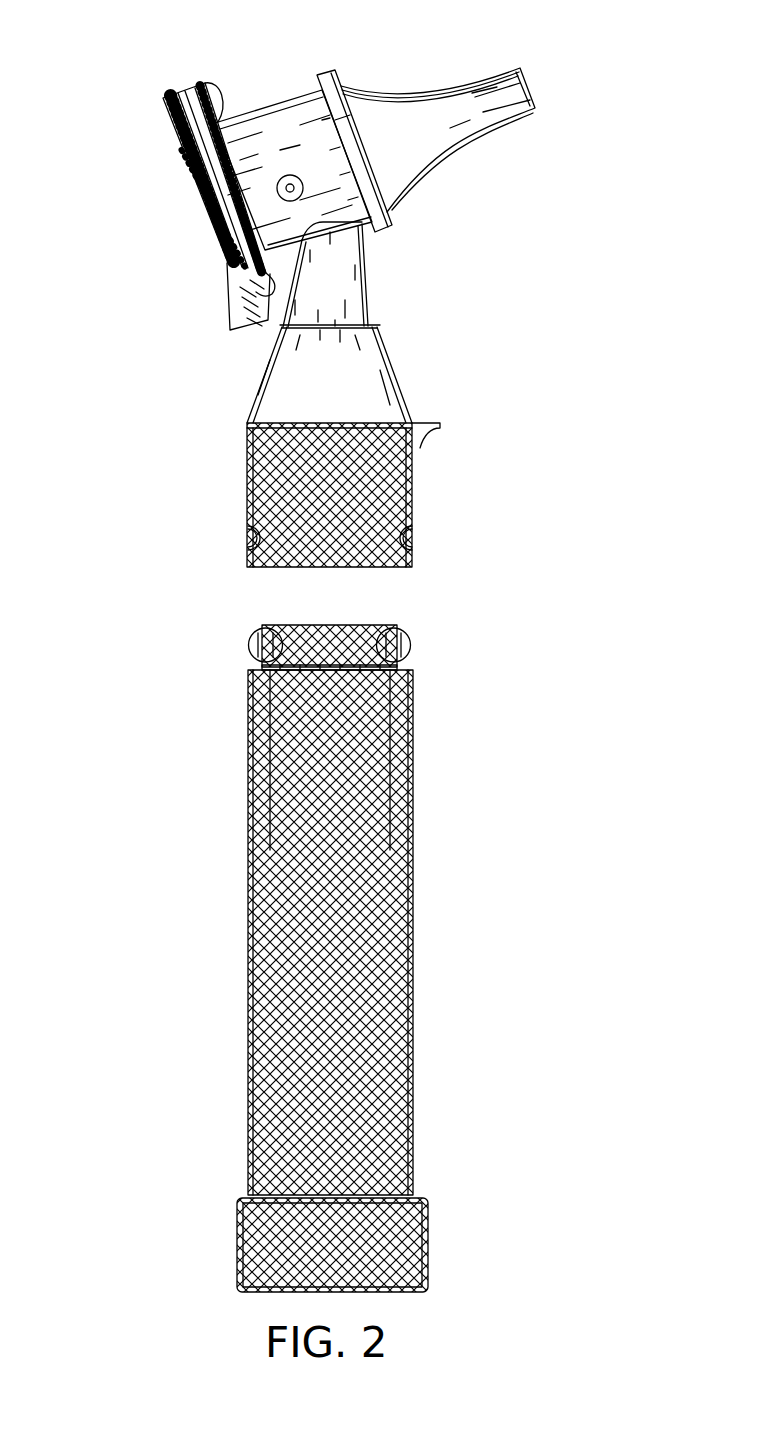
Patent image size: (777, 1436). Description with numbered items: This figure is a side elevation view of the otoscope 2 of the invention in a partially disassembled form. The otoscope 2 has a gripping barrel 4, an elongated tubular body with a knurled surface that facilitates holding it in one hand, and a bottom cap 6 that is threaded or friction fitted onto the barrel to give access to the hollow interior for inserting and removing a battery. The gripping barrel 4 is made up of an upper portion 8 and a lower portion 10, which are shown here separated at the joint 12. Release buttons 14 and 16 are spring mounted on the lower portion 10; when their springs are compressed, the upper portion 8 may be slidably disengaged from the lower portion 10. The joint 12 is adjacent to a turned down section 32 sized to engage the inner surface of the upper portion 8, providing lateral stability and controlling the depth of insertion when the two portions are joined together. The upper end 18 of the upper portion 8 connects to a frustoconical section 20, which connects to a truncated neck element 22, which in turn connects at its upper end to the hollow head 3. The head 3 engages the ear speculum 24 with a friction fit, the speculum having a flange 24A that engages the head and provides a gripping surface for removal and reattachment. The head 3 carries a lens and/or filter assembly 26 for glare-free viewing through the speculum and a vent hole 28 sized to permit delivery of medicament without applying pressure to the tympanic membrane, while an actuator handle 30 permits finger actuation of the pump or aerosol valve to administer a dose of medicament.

The otoscope 2 is at (315, 862).
The hollow head 3 is at (265, 103).
The gripping barrel 4 is at (247, 800).
The bottom cap 6 is at (430, 1245).
The upper portion 8 is at (248, 470).
The lower portion 10 is at (413, 930).
The joint 12 is at (412, 667).
The release button 14 is at (252, 542).
The release button 16 is at (408, 542).
The upper end 18 is at (248, 425).
The frustoconical section 20 is at (255, 385).
The truncated neck element 22 is at (367, 272).
The ear speculum 24 is at (502, 127).
The flange 24A is at (338, 110).
The lens and/or filter assembly 26 is at (230, 295).
The vent hole 28 is at (296, 177).
The actuator handle 30 is at (440, 425).
The turned down section 32 is at (308, 625).